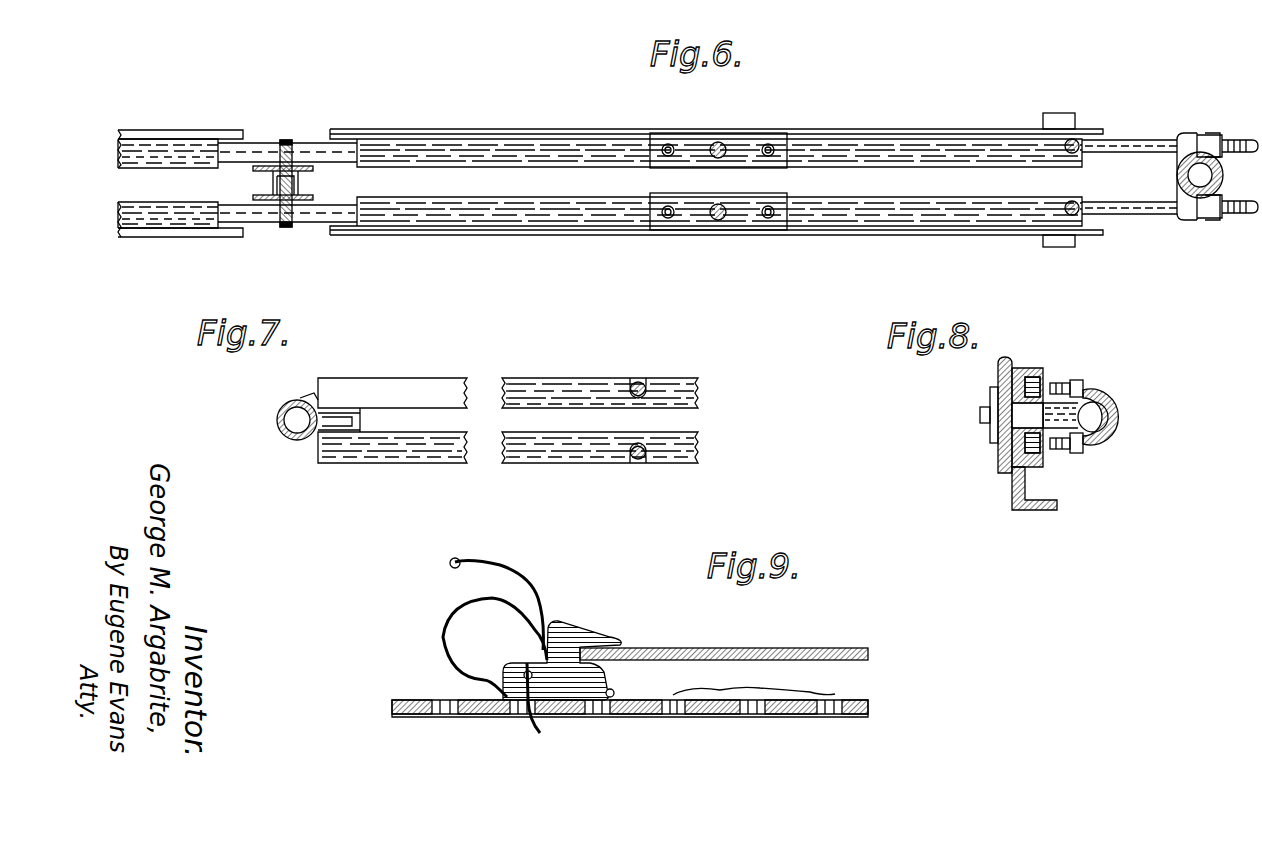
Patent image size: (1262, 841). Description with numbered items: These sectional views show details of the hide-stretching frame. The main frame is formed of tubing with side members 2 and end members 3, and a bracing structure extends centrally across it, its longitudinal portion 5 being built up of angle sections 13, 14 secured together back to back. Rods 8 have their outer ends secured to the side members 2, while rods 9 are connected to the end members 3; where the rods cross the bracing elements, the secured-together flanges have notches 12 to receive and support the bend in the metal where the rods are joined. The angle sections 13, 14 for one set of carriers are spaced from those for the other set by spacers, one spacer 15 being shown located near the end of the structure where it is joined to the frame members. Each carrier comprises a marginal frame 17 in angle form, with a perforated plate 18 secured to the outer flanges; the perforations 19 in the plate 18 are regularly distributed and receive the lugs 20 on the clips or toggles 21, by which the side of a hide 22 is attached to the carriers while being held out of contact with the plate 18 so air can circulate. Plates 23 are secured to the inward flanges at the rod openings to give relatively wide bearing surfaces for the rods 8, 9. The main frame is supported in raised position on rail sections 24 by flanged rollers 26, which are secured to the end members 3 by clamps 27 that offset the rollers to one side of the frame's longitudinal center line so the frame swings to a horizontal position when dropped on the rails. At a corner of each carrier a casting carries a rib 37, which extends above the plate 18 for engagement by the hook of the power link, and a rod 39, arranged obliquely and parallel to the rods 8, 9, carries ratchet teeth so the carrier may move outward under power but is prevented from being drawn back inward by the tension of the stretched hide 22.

In FIG. 6, the side member 2 is at (1177, 175).
In FIG. 7, the end member 3 is at (276, 418).
In FIG. 8, the end member 3 is at (1120, 417).
In FIG. 6, the longitudinal portion of bracing structure 5 is at (285, 228).
In FIG. 6, the rod 8 is at (1160, 145).
In FIG. 6, the rod 9 is at (720, 144).
In FIG. 7, the rod 9 is at (647, 384).
In FIG. 7, the notch 12 is at (637, 380).
In FIG. 6, the angle section 13 is at (281, 140).
In FIG. 6, the angle section 14 is at (289, 140).
In FIG. 7, the angle section 14 is at (408, 390).
In FIG. 6, the spacer 15 is at (300, 180).
In FIG. 6, the marginal frame 17 is at (627, 158).
In FIG. 6, the perforated plate 18 is at (152, 138).
In FIG. 9, the perforated plate 18 is at (852, 702).
In FIG. 6, the perforation 19 is at (137, 158).
In FIG. 9, the perforation 19 is at (755, 705).
In FIG. 9, the lug 20 is at (545, 732).
In FIG. 9, the clip 21 is at (587, 633).
In FIG. 9, the hide 22 is at (757, 649).
In FIG. 6, the plate 23 is at (775, 191).
In FIG. 8, the rail section 24 is at (1028, 490).
In FIG. 8, the flanged roller 26 is at (1000, 470).
In FIG. 8, the clamp 27 is at (1100, 391).
In FIG. 6, the rib 37 is at (1060, 113).
In FIG. 6, the rod 39 is at (1078, 154).